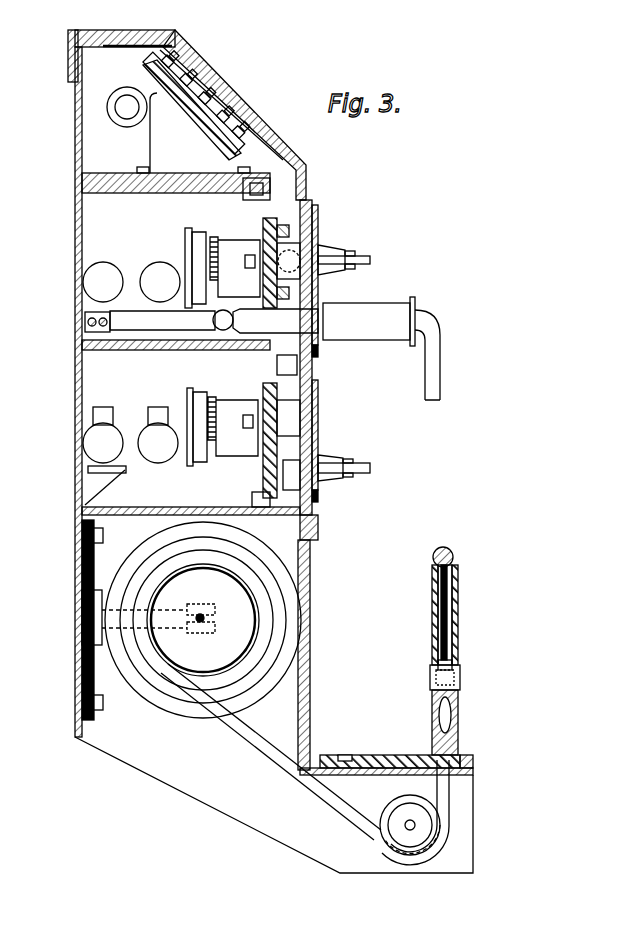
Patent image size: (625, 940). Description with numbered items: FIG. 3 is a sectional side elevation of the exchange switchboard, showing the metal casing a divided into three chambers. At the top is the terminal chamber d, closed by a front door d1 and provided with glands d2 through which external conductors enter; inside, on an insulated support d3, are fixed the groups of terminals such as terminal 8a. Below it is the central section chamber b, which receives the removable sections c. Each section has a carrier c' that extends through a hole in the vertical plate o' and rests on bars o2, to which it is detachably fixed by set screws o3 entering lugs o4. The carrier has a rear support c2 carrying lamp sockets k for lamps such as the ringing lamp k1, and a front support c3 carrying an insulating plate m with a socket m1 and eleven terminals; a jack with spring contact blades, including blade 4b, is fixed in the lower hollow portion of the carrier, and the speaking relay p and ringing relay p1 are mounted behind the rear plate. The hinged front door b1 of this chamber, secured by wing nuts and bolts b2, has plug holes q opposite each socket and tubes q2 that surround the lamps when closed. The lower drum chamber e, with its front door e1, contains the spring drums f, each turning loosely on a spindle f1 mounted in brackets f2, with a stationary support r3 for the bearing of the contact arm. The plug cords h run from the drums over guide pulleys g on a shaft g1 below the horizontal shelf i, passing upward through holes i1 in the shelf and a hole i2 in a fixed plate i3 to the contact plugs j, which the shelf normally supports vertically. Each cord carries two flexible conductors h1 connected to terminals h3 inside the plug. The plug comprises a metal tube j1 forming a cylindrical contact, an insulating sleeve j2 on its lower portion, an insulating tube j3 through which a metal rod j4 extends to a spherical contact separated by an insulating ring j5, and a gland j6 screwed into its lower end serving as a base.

The metal casing a is at (232, 818).
The upper chamber d is at (179, 133).
The front door d1 is at (243, 115).
The glands d2 is at (118, 104).
The insulated support d3 is at (198, 120).
The terminal 8a is at (170, 84).
The vertical plate o' is at (256, 189).
The carrier c' is at (139, 364).
The central chamber b is at (177, 308).
The rear vertical support c2 is at (186, 250).
The lamp sockets k is at (226, 347).
The front vertical support c3 is at (262, 222).
The removable section c is at (197, 299).
The plate of insulating material m is at (288, 315).
The socket m1 is at (288, 414).
The front door b1 is at (312, 222).
The tubes q2 is at (318, 262).
The pivotal wing nuts and bolts b2 is at (355, 258).
The incandescent electric lamp k1 is at (318, 280).
The plug holes q is at (320, 347).
The metal tube j1 is at (476, 612).
The ring of insulating material j5 is at (240, 332).
The bars o2 is at (90, 333).
The spring contact blade 4b is at (150, 333).
The sleeve of insulating material j2 is at (462, 680).
The plug cords h is at (430, 352).
The speaking relay p is at (104, 456).
The ringing relay p1 is at (158, 435).
The lugs o4 is at (254, 494).
The set screws o3 is at (300, 516).
The lower chamber e is at (191, 626).
The front door e1 is at (308, 632).
The stationary support r3 is at (88, 540).
The contact drum f is at (218, 640).
The spindle f1 is at (211, 618).
The brackets f2 is at (172, 632).
The contact plug j is at (458, 668).
The tube of insulating material j3 is at (460, 636).
The metal rod j4 is at (458, 580).
The insulated terminals h3 is at (432, 682).
The flexible insulated conductors h1 is at (458, 700).
The gland j6 is at (460, 735).
The horizontal shelf i is at (358, 757).
The fixed plate i3 is at (382, 756).
The hole i2 is at (474, 760).
The holes i1 is at (473, 772).
The guide pulleys g is at (386, 814).
The shaft g1 is at (415, 826).